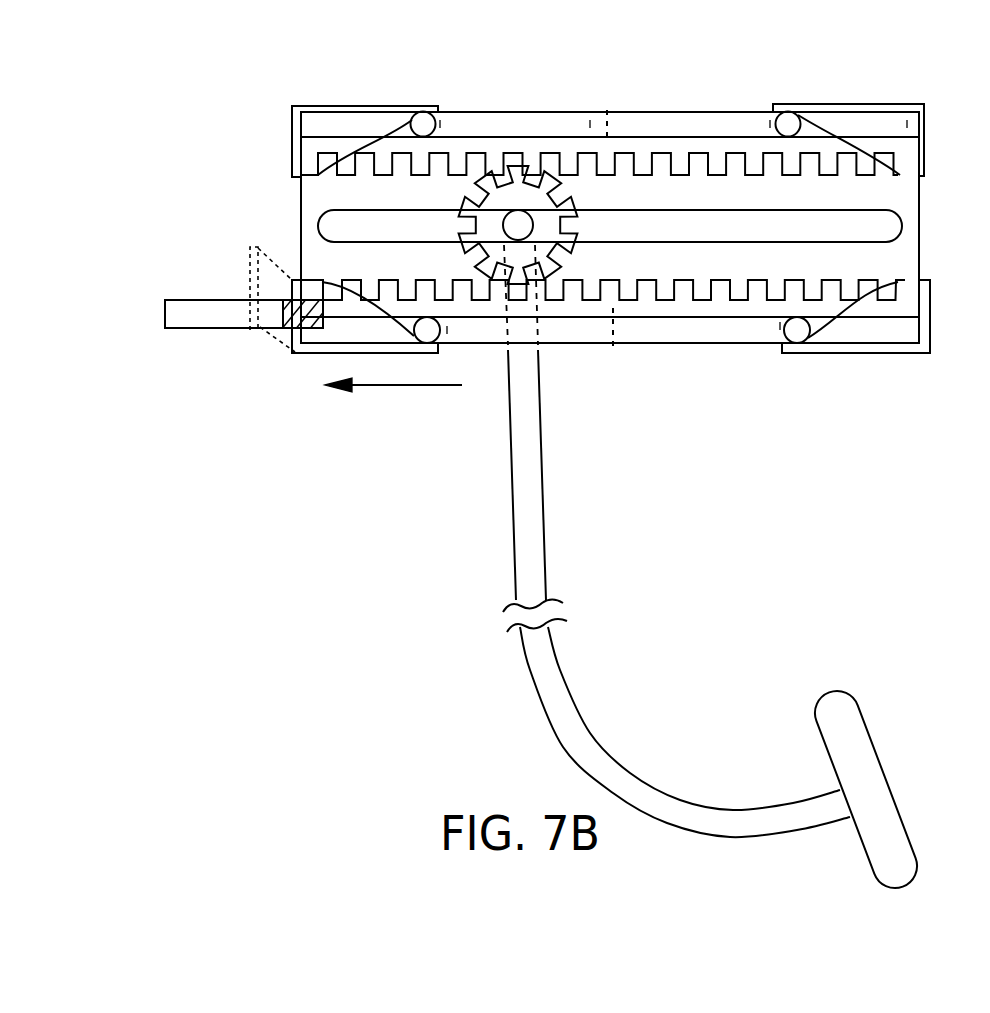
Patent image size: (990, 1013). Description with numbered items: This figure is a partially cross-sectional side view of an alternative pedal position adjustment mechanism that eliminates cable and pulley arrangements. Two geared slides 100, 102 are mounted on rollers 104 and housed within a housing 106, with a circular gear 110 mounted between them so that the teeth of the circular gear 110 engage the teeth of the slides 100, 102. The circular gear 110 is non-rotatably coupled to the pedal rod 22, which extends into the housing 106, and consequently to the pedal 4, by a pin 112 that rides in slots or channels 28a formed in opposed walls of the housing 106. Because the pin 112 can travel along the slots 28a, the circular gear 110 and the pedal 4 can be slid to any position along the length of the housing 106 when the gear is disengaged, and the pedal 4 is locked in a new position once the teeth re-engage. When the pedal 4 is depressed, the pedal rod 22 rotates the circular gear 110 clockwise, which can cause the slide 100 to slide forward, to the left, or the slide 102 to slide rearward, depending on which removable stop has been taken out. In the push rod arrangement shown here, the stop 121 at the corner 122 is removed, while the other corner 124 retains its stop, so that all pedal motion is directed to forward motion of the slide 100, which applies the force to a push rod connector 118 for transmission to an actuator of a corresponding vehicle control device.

The pedal 4 is at (867, 777).
The pedal rod 22 is at (557, 687).
The slots or channels 28a is at (302, 272).
The geared slide 100 is at (693, 310).
The geared slide 102 is at (726, 142).
The rollers 104 is at (430, 105).
The housing 106 is at (893, 357).
The circular gear 110 is at (560, 222).
The pin 112 is at (518, 225).
The push rod connector 118 is at (241, 321).
The removable stop 121 is at (240, 329).
The corner 122 is at (293, 356).
The corner 124 is at (926, 122).